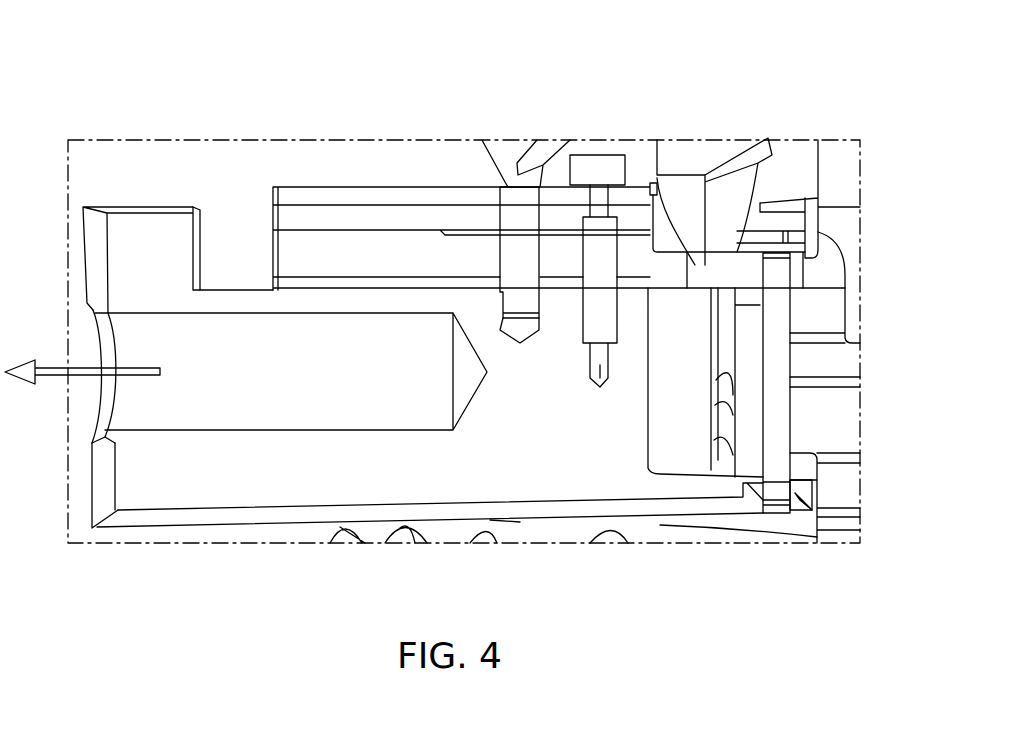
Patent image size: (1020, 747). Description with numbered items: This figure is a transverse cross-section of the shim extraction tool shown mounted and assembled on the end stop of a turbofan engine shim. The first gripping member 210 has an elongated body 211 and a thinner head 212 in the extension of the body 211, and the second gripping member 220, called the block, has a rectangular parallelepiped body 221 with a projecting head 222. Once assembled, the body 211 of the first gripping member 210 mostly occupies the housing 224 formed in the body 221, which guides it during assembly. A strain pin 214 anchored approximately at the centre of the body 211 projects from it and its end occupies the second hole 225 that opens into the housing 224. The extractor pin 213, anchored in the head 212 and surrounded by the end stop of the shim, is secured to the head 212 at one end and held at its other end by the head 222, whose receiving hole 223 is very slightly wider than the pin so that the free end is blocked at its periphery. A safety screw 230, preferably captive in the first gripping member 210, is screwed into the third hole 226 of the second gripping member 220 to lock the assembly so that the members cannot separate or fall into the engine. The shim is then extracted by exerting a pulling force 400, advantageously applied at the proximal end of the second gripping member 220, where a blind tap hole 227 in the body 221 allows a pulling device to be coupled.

The first gripping member 210 is at (458, 113).
The body 211 is at (325, 197).
The head 212 is at (703, 262).
The extractor pin 213 is at (780, 305).
The strain pin 214 is at (543, 341).
The second gripping member 220 is at (227, 548).
The body 221 is at (118, 513).
The head 222 is at (820, 452).
The receiving hole 223 is at (815, 512).
The housing 224 is at (228, 240).
The second hole 225 is at (520, 343).
The third hole 226 is at (600, 365).
The tap hole 227 is at (140, 405).
The safety screw 230 is at (588, 167).
The pulling force 400 is at (37, 363).